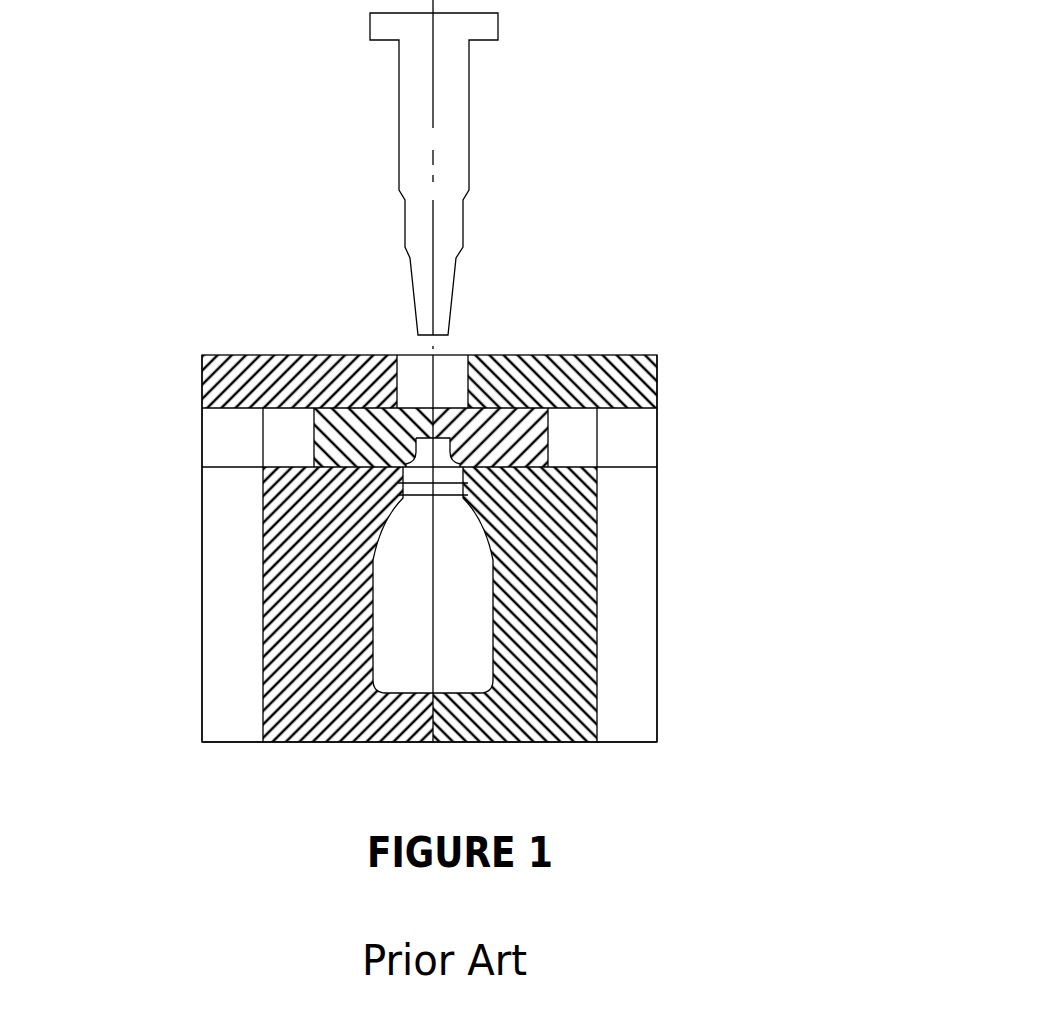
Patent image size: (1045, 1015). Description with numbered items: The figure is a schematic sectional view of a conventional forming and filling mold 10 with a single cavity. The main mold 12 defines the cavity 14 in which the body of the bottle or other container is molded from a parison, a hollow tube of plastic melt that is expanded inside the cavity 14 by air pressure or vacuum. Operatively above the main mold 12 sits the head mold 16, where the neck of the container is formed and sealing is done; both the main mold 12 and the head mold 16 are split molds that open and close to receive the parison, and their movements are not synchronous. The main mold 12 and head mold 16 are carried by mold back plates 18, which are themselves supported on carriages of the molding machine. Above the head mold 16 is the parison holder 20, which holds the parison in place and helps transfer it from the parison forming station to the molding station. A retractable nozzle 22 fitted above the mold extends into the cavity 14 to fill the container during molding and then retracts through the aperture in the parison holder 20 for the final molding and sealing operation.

The mold 10 is at (558, 490).
The main mold 12 is at (597, 706).
The cavity 14 is at (453, 564).
The head mold 16 is at (548, 439).
The mold back plates 18 is at (232, 633).
The parison holder 20 is at (493, 328).
The retractable nozzle 22 is at (469, 193).